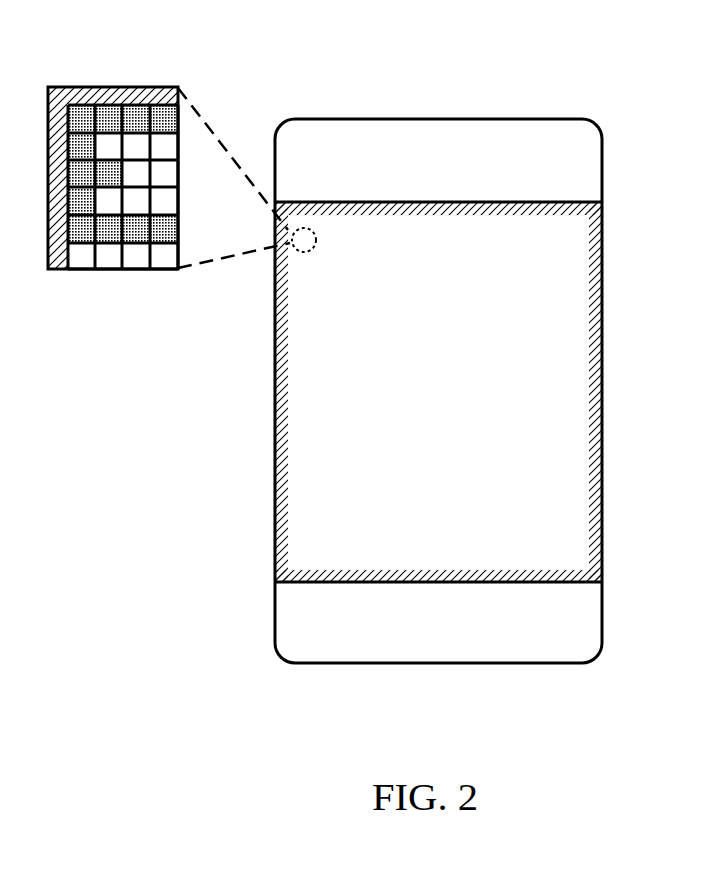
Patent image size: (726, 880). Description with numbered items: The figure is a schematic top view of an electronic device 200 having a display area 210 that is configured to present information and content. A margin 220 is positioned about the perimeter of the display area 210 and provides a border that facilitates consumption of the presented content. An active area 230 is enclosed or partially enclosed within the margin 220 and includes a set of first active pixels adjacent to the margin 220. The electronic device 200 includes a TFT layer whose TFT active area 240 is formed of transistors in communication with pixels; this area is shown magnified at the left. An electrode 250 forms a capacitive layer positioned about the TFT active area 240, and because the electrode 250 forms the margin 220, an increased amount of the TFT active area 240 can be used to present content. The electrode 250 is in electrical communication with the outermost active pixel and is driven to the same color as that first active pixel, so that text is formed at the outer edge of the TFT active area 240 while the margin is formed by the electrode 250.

The electronic device 200 is at (598, 73).
The display area 210 is at (582, 194).
The margin 220 is at (598, 286).
The active area 230 is at (560, 386).
The TFT active area 240 is at (108, 256).
The electrode 250 is at (113, 97).